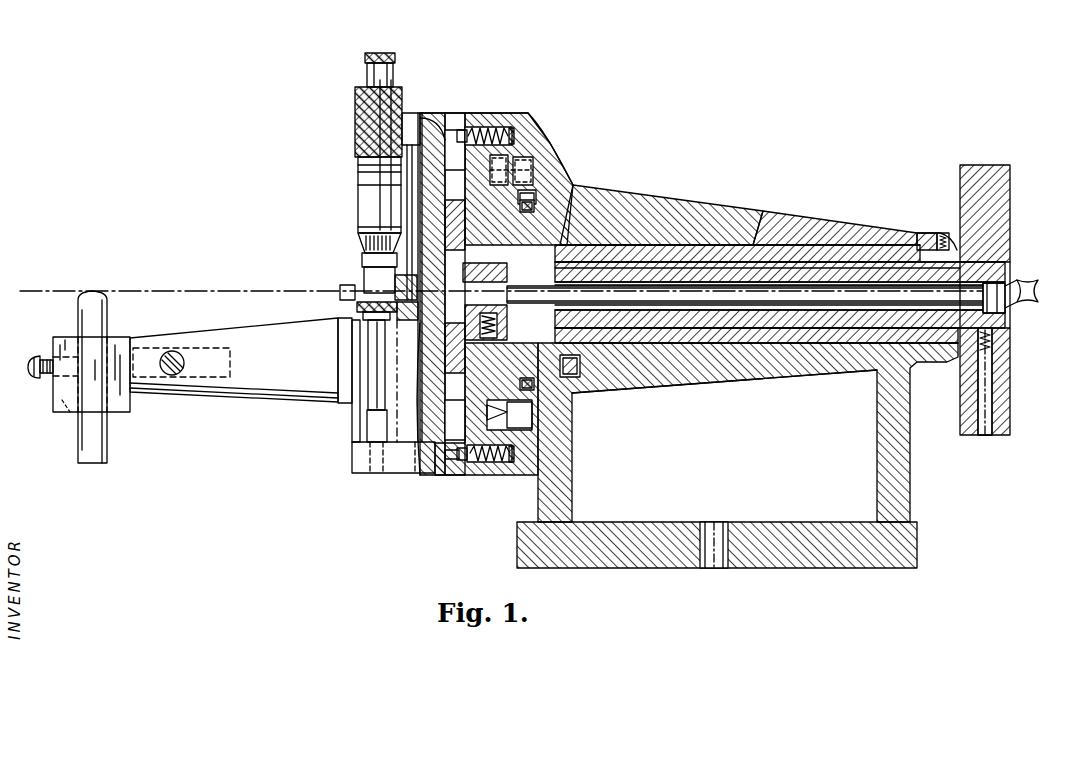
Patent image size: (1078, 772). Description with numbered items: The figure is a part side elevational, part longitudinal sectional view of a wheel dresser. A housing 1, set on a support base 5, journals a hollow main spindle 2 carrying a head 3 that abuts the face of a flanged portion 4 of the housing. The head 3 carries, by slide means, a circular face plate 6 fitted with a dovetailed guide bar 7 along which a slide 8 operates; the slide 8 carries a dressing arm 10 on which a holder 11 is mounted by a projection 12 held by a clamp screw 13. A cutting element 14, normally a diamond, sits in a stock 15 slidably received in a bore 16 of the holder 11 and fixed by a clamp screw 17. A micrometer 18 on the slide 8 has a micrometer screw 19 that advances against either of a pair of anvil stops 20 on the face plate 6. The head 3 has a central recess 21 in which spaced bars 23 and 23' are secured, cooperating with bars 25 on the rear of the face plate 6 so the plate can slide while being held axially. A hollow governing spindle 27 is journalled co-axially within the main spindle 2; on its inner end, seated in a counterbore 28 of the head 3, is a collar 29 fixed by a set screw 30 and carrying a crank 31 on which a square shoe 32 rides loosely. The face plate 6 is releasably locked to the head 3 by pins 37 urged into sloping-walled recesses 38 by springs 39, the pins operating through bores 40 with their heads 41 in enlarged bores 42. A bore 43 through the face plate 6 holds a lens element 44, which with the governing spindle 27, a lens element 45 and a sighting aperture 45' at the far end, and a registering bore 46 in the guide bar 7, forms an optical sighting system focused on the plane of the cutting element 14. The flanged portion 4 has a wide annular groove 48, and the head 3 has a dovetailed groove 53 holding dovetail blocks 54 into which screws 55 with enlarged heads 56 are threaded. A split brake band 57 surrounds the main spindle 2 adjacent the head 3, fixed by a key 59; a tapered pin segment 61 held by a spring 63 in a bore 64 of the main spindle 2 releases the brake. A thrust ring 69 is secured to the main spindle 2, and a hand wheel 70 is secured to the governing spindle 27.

The housing 1 is at (748, 255).
The hollow main spindle 2 is at (780, 218).
The head 3 is at (497, 125).
The flanged portion 4 is at (537, 150).
The support base 5 is at (645, 522).
The face plate 6 is at (438, 117).
The dovetailed guide bar 7 is at (408, 455).
The slide 8 is at (338, 395).
The dressing arm 10 is at (275, 385).
The holder 11 is at (60, 400).
The projection 12 is at (150, 348).
The clamp screw 13 is at (180, 376).
The cutting element 14 is at (95, 292).
The stock 15 is at (80, 316).
The bore 16 is at (66, 412).
The clamp screw 17 is at (30, 378).
The micrometer 18 is at (375, 212).
The micrometer screw 19 is at (352, 418).
The stops 20 is at (360, 445).
The central recess 21 is at (400, 170).
The bar 23 is at (559, 185).
The bar 23' is at (548, 423).
The bars 25 is at (398, 222).
The hollow governing spindle 27 is at (800, 265).
The recess or counterbore 28 is at (605, 210).
The collar 29 is at (620, 380).
The set screw 30 is at (507, 306).
The crank 31 is at (380, 260).
The shoe 32 is at (385, 302).
The pins 37 is at (462, 128).
The recesses or orifices 38 is at (420, 130).
The springs 39 is at (480, 127).
The bores 40 is at (465, 463).
The heads 41 is at (478, 466).
The enlarged bores 42 is at (513, 160).
The bore 43 is at (420, 310).
The lens element 44 is at (395, 290).
The lens element 45 is at (1021, 277).
The sighting aperture 45' is at (1018, 378).
The registering bore 46 is at (352, 298).
The annular groove 48 is at (550, 190).
The dovetailed groove 53 is at (400, 184).
The dovetail blocks 54 is at (517, 140).
The screws 55 is at (540, 168).
The enlarged heads 56 is at (545, 180).
The brake band 57 is at (660, 240).
The key 59 is at (601, 378).
The pin segment 61 is at (620, 230).
The spring 63 is at (690, 235).
The bore 64 is at (700, 250).
The thrust ring 69 is at (930, 235).
The hand wheel 70 is at (990, 180).